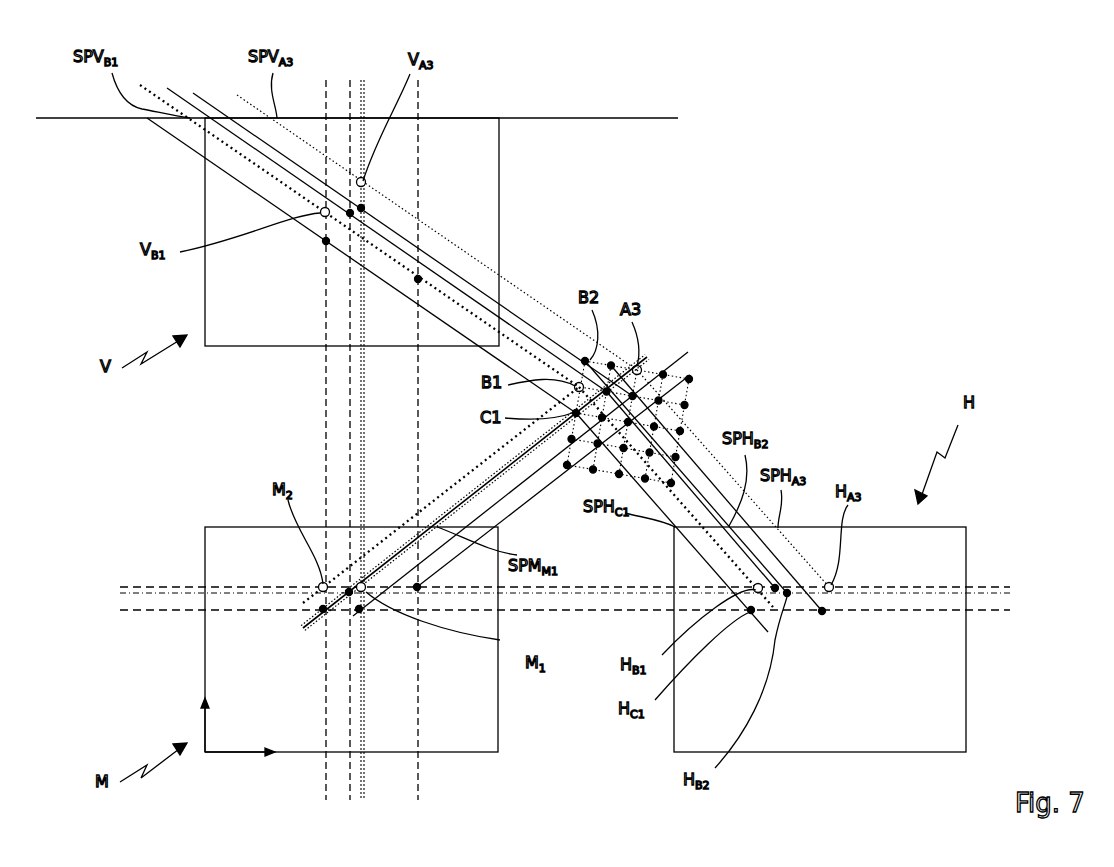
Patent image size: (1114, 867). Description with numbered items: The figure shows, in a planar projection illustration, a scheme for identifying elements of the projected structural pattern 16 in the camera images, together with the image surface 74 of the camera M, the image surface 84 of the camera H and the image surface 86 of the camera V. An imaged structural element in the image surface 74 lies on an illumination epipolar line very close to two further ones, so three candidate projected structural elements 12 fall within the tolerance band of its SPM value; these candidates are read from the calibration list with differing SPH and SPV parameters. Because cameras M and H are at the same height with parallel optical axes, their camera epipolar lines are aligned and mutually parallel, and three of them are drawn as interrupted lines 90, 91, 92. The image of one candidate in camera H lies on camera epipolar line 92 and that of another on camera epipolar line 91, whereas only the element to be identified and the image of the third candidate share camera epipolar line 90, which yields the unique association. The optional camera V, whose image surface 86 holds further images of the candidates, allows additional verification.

The projected structural elements 12 is at (686, 406).
The projected structural pattern 16 is at (671, 342).
The image surface of the camera M 74 is at (216, 669).
The image surface of the camera H 84 is at (822, 720).
The image surface of the camera V 86 is at (215, 297).
The camera epipolar line 90 is at (206, 587).
The camera epipolar line 91 is at (150, 594).
The camera epipolar line 92 is at (168, 611).